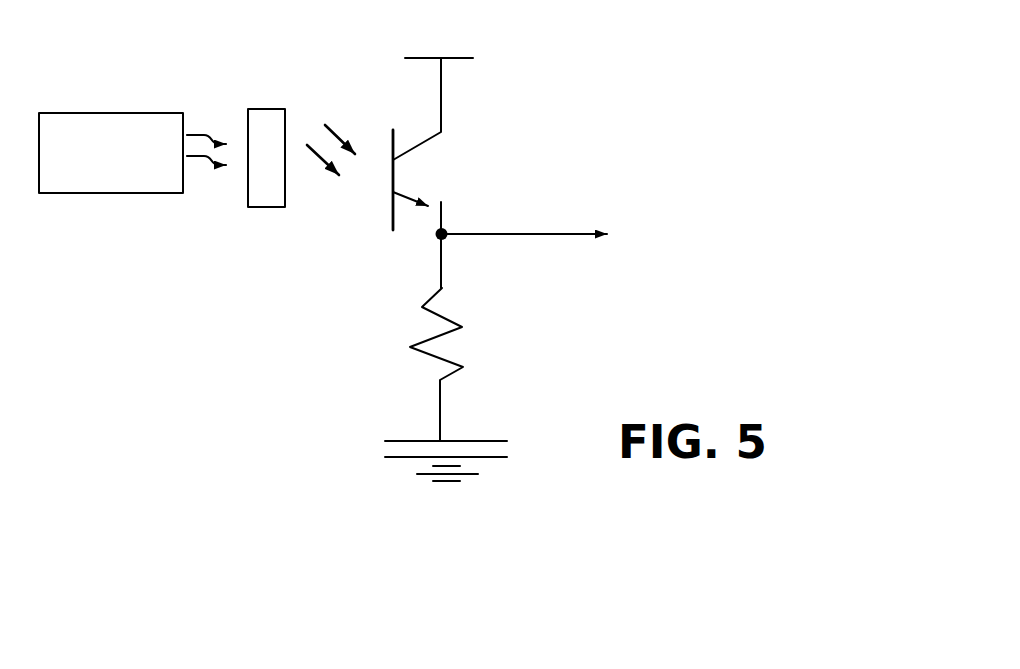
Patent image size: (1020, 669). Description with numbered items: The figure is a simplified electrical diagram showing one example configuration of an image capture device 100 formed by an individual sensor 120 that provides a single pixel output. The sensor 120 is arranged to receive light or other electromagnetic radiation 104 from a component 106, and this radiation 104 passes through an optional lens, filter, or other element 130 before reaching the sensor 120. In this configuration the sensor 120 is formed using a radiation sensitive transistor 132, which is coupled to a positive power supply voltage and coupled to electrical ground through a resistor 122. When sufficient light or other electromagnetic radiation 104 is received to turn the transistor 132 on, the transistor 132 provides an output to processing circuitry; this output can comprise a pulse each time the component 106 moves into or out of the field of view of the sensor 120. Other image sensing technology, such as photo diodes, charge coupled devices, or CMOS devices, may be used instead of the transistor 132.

The image capture device 100 is at (793, 148).
The light or other electromagnetic radiation 104 is at (203, 136).
The component 106 is at (132, 162).
The sensor 120 is at (496, 252).
The resistor 122 is at (452, 320).
The lens, filter, or other element 130 is at (263, 109).
The radiation sensitive transistor 132 is at (392, 203).